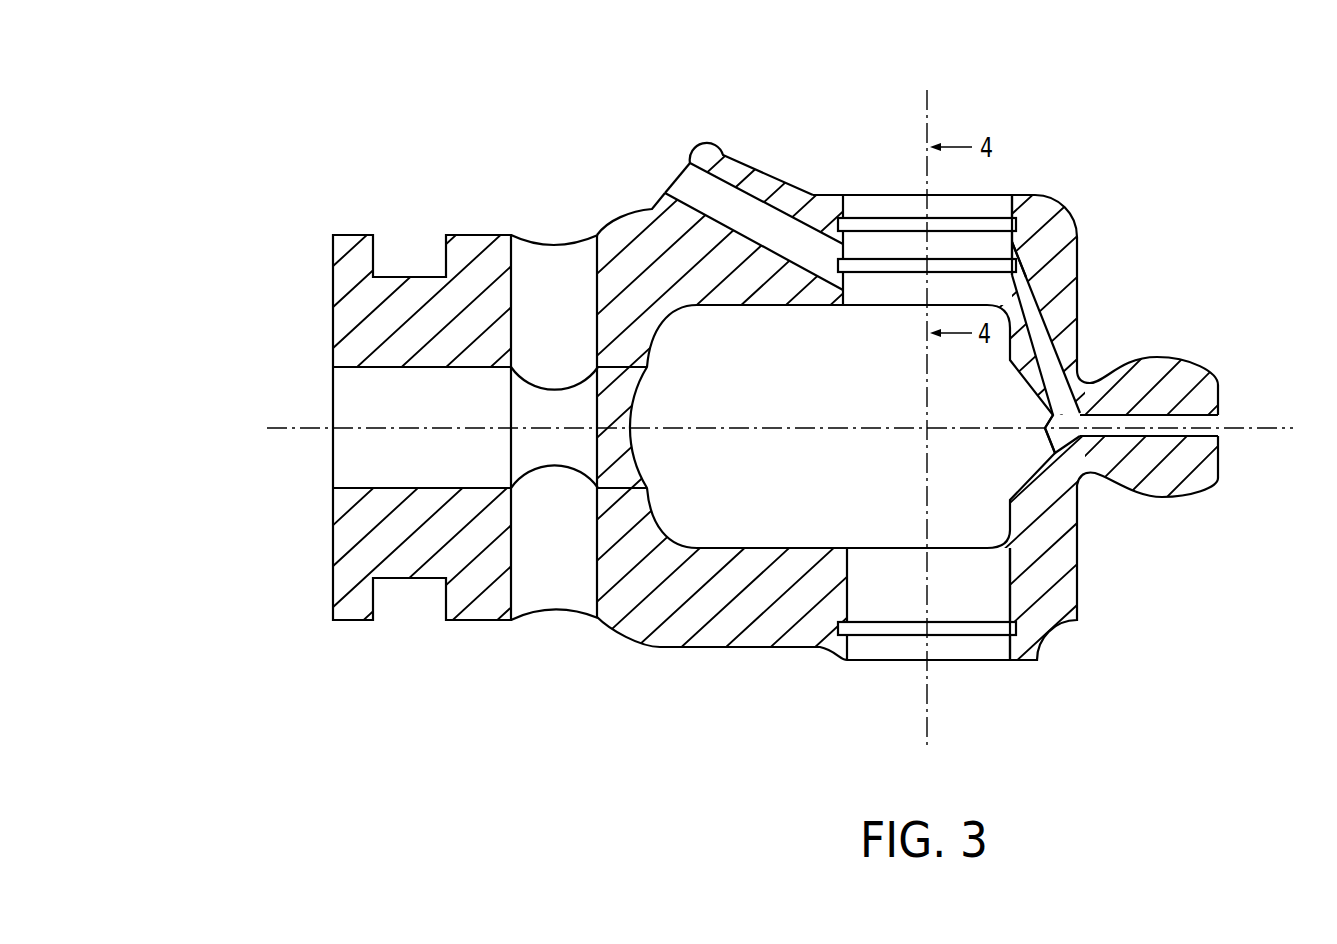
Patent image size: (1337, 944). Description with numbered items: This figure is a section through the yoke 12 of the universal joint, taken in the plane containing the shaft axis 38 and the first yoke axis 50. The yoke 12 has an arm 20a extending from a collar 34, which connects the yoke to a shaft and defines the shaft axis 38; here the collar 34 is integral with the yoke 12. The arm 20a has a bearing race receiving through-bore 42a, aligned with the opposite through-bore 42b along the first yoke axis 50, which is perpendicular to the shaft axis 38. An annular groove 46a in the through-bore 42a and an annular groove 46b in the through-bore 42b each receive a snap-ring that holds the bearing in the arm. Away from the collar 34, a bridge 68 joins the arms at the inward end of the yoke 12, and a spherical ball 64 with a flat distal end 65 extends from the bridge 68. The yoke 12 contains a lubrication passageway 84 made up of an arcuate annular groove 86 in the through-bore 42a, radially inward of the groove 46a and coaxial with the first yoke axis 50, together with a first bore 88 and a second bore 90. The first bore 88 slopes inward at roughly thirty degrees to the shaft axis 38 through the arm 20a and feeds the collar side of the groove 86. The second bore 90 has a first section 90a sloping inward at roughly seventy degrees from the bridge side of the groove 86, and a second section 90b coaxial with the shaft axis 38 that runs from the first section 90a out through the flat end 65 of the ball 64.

The yoke 12 is at (652, 650).
The arm 20a is at (775, 178).
The collar 34 is at (472, 622).
The shaft axis 38 is at (298, 430).
The bearing race receiving through-bore 42a is at (848, 205).
The bearing race receiving through-bore 42b is at (845, 650).
The annular groove 46a is at (993, 217).
The annular groove 46b is at (993, 640).
The first yoke axis 50 is at (927, 120).
The spherical ball 64 is at (1157, 497).
The flat distal end 65 is at (1218, 395).
The bridge 68 is at (1077, 245).
The lubrication passageway 84 is at (716, 157).
The arcuate annular groove 86 is at (884, 285).
The first bore 88 is at (687, 203).
The second bore 90 is at (1048, 302).
The first section of second bore 90a is at (1077, 315).
The second section of second bore 90b is at (1210, 436).